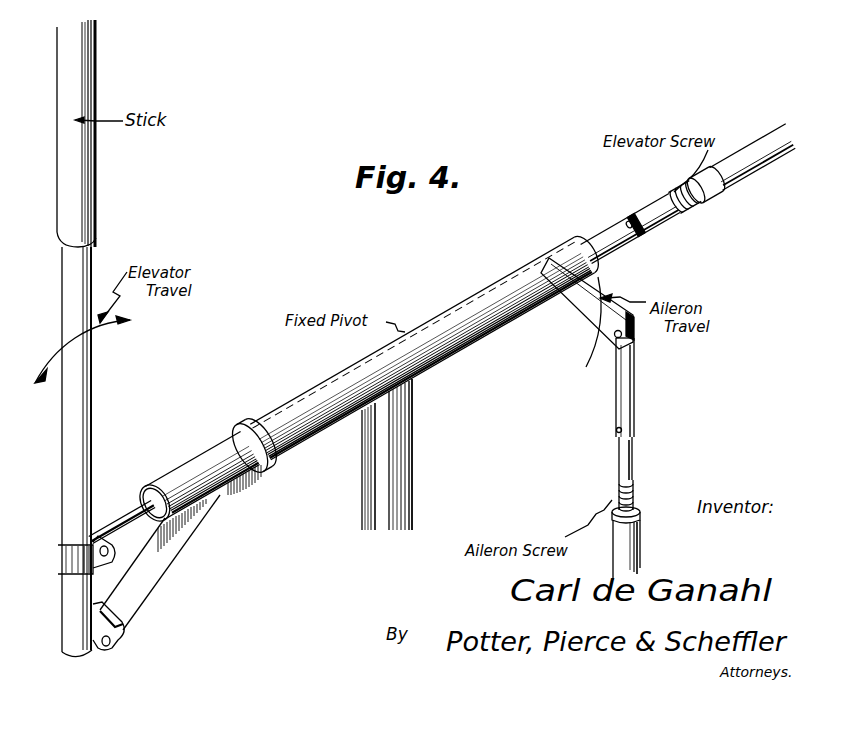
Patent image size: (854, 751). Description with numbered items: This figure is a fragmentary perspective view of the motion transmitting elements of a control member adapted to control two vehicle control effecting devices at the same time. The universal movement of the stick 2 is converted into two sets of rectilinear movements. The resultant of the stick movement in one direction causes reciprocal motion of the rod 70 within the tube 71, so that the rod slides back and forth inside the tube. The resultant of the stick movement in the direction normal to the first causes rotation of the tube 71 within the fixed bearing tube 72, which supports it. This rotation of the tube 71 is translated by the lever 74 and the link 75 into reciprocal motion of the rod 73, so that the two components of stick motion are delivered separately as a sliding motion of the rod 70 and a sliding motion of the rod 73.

The stick 2 is at (80, 90).
The rod 70 is at (130, 514).
The tube 71 is at (210, 452).
The fixed bearing tube 72 is at (460, 300).
The rod 73 is at (634, 452).
The lever 74 is at (573, 318).
The link 75 is at (614, 415).